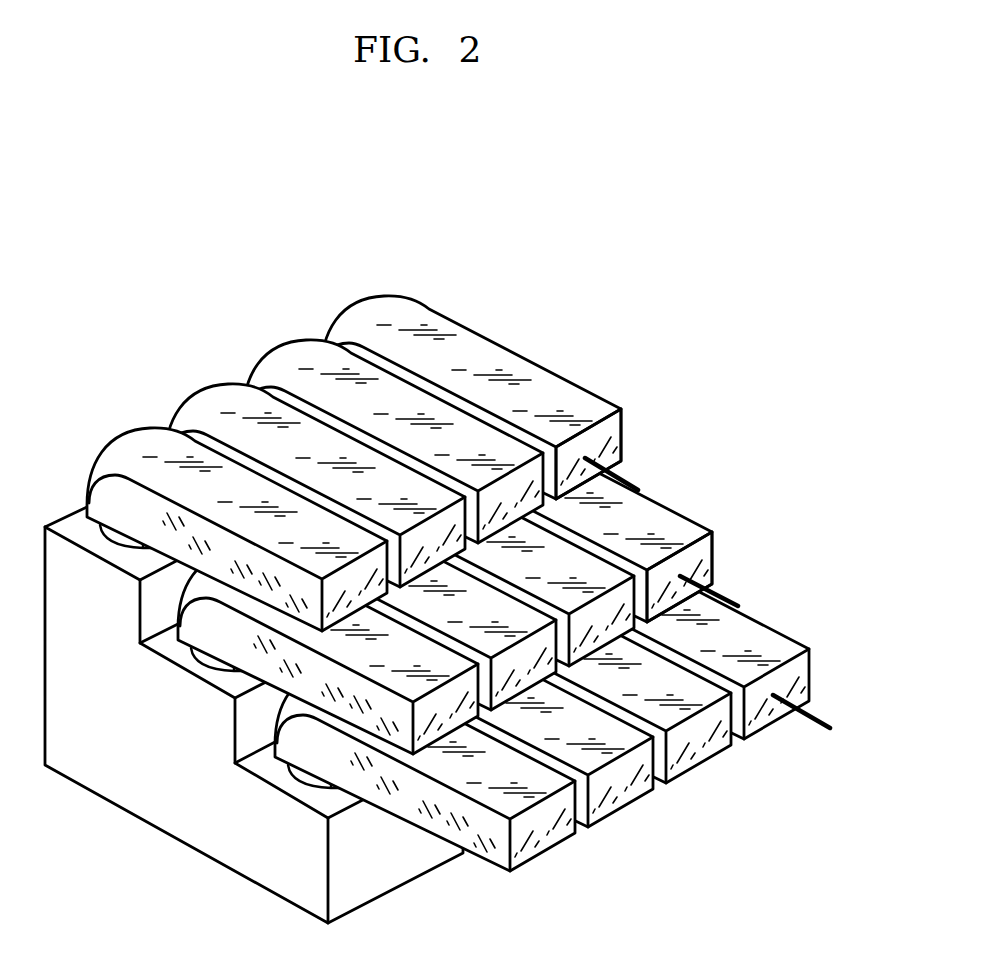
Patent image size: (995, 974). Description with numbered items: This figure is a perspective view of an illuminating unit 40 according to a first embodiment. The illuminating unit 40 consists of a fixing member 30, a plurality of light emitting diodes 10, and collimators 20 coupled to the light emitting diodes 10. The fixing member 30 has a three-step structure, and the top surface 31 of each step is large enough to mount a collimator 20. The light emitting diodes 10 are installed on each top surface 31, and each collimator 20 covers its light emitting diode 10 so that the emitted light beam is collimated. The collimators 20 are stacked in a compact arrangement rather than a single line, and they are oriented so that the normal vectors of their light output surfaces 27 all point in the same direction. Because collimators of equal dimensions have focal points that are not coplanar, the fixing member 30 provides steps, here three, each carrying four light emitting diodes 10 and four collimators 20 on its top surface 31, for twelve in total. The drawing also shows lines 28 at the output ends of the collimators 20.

The light emitting diode 10 is at (302, 777).
The collimator 20 is at (497, 583).
The light output surface 27 is at (608, 440).
The emitted light line 28 is at (721, 598).
The fixing member 30 is at (241, 678).
The top surface 31 is at (80, 532).
The illuminating unit 40 is at (463, 615).